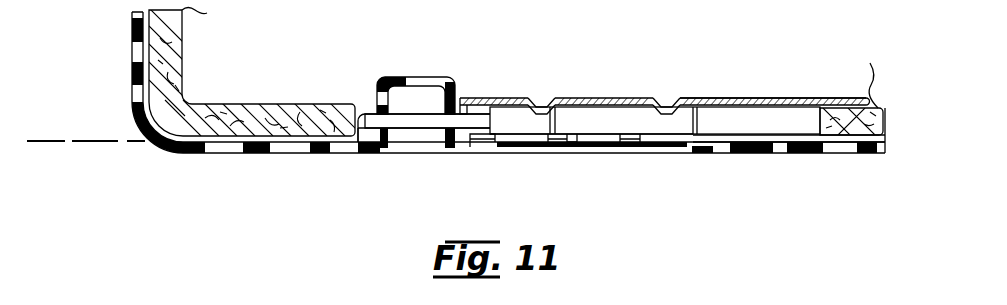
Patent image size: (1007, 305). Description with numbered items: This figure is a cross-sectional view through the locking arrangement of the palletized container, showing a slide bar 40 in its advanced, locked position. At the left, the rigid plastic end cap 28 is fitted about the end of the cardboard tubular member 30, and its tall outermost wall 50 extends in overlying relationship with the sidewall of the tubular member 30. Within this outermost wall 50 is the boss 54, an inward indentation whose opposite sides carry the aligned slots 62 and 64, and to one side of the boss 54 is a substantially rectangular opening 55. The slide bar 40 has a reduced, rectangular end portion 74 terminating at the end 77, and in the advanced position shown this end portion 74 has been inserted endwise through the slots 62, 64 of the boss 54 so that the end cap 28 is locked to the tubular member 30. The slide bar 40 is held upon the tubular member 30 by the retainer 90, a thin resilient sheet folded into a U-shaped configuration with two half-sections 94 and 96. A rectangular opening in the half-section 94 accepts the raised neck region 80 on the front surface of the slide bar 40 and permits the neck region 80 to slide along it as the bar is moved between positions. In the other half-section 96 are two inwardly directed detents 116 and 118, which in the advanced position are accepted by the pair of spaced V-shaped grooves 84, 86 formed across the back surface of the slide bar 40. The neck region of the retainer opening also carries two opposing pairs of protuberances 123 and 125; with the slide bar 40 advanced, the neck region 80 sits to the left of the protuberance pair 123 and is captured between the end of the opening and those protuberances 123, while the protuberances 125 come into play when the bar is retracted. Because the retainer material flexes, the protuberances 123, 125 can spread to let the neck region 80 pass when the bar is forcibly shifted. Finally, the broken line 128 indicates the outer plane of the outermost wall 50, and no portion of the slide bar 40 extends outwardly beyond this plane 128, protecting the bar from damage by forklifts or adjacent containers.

The end cap 28 is at (132, 70).
The tubular member 30 is at (238, 104).
The slide bar 40 is at (697, 112).
The outermost wall 50 is at (271, 153).
The boss 54 is at (415, 77).
The rectangular opening 55 is at (503, 154).
The slot 62 is at (377, 114).
The slot 64 is at (477, 102).
The end portion 74 is at (418, 122).
The end 77 is at (357, 136).
The neck region 80 is at (545, 150).
The groove 84 is at (548, 147).
The groove 86 is at (694, 110).
The retainer 90 is at (713, 98).
The half-section 94 is at (755, 144).
The half-section 96 is at (586, 99).
The detent 116 is at (529, 101).
The detent 118 is at (657, 108).
The protuberance pair 123 is at (573, 143).
The protuberance pair 125 is at (643, 143).
The outer plane 128 is at (90, 142).